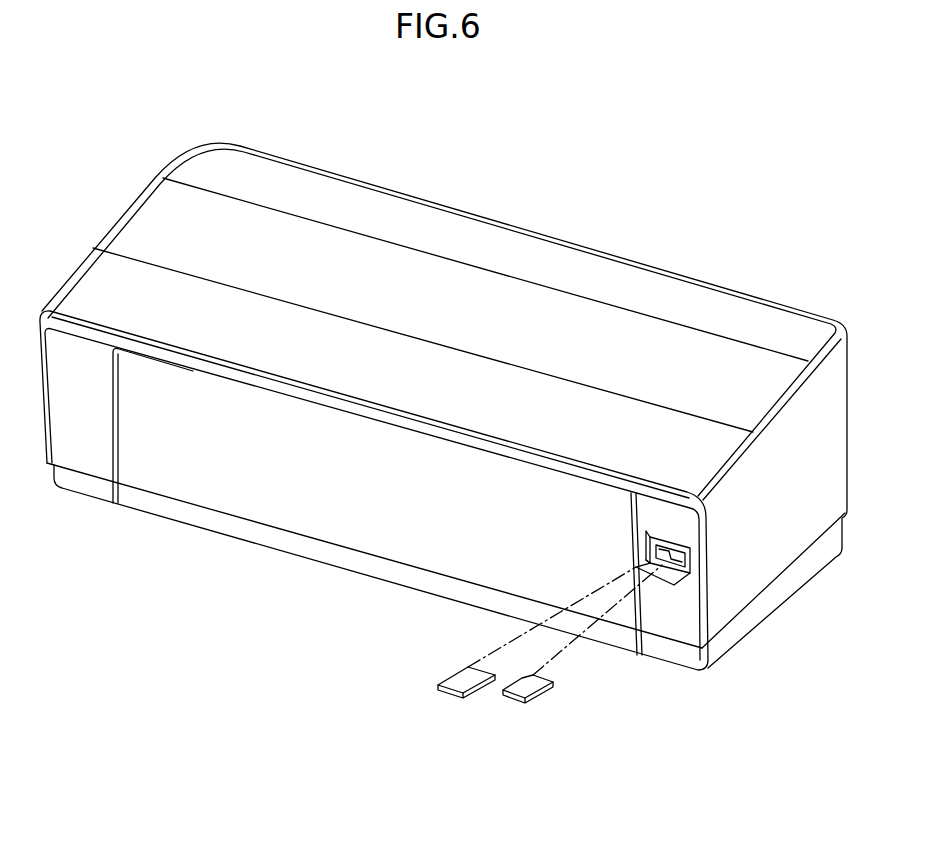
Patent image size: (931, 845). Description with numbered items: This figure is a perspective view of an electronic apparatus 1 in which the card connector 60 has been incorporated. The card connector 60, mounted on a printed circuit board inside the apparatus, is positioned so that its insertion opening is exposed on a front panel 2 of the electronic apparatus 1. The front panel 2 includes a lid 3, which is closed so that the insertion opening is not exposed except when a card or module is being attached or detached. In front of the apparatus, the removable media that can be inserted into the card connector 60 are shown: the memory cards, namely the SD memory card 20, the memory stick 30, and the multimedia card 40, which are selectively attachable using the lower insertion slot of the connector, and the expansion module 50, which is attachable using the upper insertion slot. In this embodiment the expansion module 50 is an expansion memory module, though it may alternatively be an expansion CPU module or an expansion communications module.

The electronic apparatus 1 is at (594, 154).
The front panel 2 is at (684, 624).
The lid 3 is at (662, 577).
The card connector 60 is at (646, 533).
The expansion module 50 is at (458, 680).
The SD memory card 20 is at (532, 725).
The memory stick 30 is at (532, 725).
The multimedia card 40 is at (532, 690).